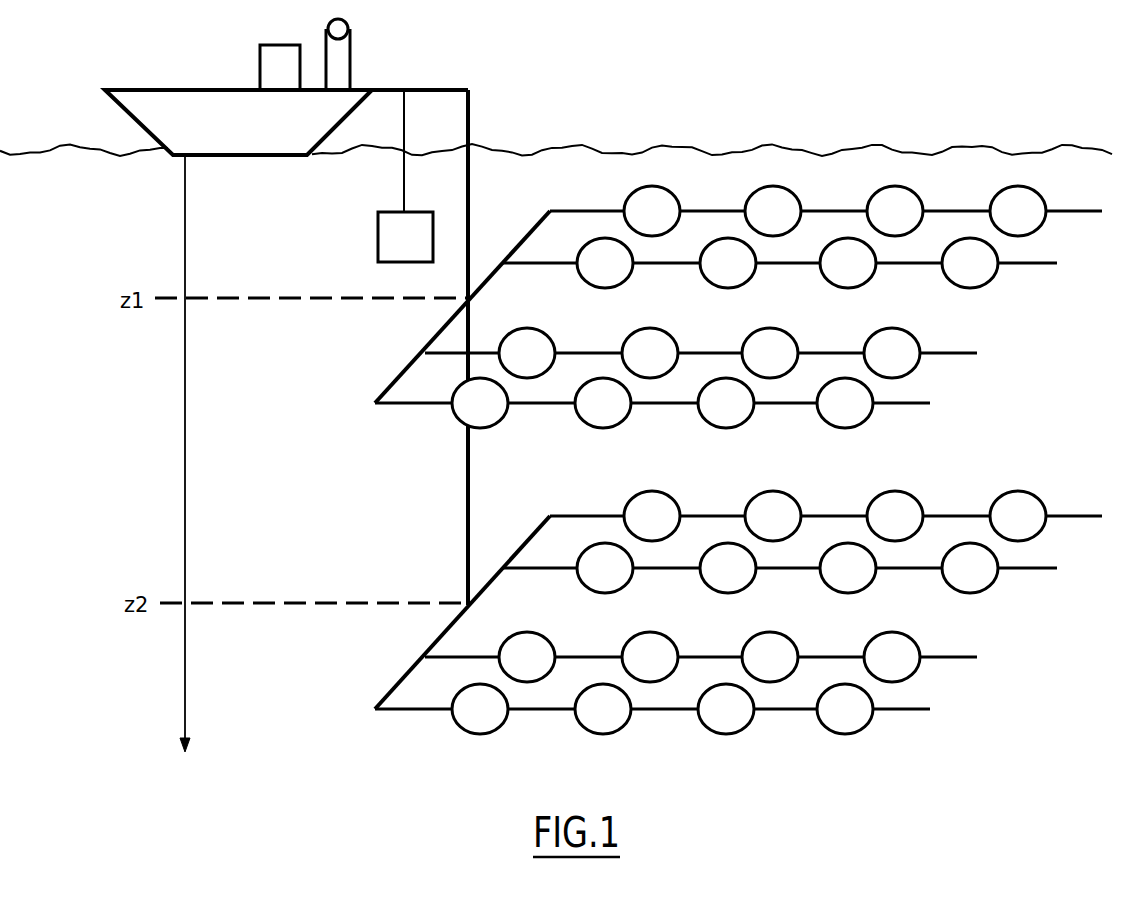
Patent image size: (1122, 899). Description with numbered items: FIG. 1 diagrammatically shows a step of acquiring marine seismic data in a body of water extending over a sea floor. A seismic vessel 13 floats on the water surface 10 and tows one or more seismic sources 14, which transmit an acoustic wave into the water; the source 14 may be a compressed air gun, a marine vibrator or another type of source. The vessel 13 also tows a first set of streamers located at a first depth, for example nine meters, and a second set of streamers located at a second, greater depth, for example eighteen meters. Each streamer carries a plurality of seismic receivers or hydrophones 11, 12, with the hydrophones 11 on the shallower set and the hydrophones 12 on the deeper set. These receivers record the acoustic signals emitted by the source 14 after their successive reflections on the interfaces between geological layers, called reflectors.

The water surface 10 is at (530, 147).
The seismic receivers or hydrophones 11 is at (1028, 222).
The seismic receivers or hydrophones 12 is at (1027, 525).
The seismic vessel 13 is at (167, 88).
The seismic source 14 is at (385, 243).